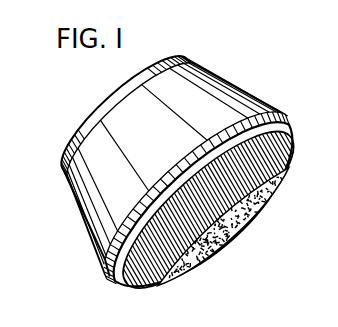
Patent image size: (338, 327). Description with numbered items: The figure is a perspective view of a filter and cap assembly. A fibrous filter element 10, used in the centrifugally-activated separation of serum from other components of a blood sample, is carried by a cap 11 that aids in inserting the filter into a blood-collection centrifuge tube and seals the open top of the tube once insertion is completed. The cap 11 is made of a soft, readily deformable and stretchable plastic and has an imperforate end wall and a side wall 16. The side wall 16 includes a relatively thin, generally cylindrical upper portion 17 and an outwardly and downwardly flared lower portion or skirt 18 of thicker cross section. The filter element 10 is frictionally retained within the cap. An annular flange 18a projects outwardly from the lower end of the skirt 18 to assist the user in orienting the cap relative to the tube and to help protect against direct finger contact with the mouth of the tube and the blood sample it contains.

The fibrous filter element 10 is at (256, 216).
The cap 11 is at (165, 167).
The side wall 16 is at (83, 199).
The upper portion 17 is at (67, 178).
The skirt 18 is at (93, 223).
The annular flange 18a is at (112, 258).